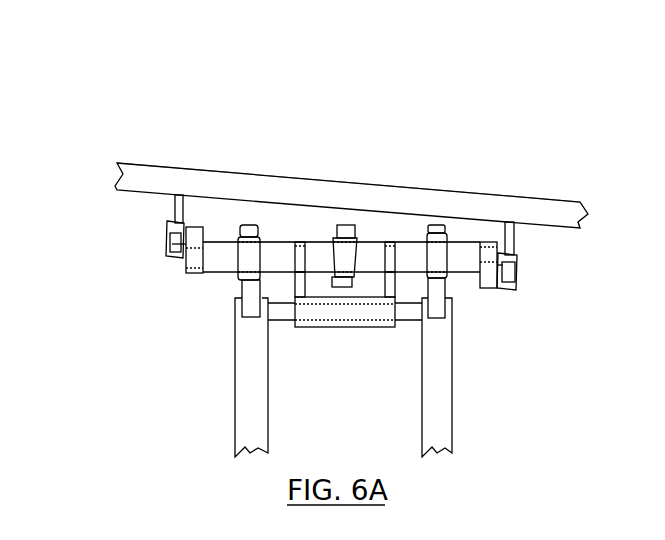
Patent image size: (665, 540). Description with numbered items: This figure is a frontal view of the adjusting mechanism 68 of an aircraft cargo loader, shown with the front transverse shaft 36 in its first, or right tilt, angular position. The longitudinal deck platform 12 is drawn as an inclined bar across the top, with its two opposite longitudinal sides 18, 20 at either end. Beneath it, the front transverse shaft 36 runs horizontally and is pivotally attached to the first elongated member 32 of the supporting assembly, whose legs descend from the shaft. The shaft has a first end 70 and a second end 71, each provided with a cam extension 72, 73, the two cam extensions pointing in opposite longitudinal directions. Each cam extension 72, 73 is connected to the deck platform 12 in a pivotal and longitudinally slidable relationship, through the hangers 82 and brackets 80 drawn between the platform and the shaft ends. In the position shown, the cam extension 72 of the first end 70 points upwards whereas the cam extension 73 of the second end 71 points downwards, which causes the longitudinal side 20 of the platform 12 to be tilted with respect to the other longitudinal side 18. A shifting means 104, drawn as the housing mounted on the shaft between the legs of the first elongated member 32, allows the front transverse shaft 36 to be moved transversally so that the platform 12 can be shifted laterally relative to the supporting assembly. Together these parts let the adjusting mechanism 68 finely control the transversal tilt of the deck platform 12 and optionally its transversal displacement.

The deck platform 12 is at (413, 188).
The longitudinal side 18 is at (543, 199).
The longitudinal side 20 is at (148, 163).
The first elongated member 32 is at (453, 410).
The front transverse shaft 36 is at (370, 240).
The adjusting mechanism 68 is at (125, 373).
The first end 70 is at (218, 241).
The second end 71 is at (462, 241).
The cam extension 72 is at (195, 274).
The cam extension 73 is at (487, 289).
The clamp bracket 80 is at (167, 247).
The hanger 82 is at (177, 198).
The shifting means 104 is at (343, 328).